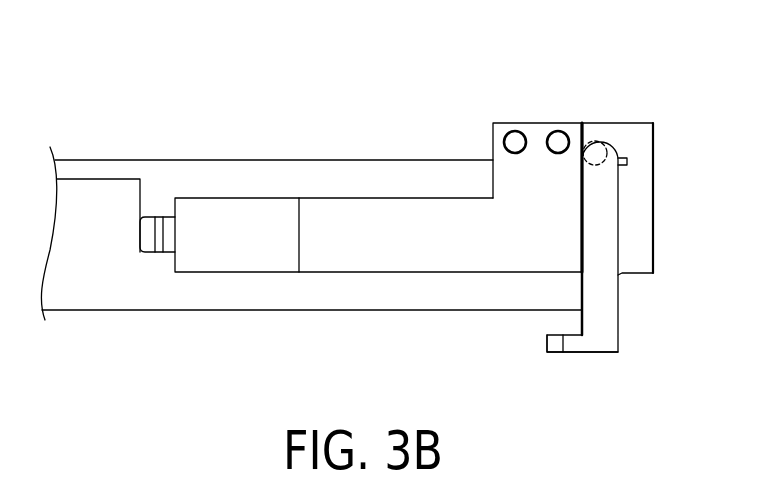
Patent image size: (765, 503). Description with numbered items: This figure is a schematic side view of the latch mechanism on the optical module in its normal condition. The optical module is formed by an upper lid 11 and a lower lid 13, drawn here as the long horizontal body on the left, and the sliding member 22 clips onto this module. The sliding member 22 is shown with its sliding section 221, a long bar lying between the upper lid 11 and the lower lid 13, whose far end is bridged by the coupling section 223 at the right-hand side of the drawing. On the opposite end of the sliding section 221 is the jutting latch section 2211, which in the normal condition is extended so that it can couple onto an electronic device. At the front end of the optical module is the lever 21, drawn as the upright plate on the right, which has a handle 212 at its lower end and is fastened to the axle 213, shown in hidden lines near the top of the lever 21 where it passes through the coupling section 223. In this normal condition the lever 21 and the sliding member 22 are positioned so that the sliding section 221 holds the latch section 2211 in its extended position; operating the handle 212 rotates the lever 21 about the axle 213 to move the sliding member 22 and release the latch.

The upper lid 11 is at (258, 170).
The lower lid 13 is at (258, 302).
The lever 21 is at (612, 298).
The handle 212 is at (585, 345).
The axle 213 is at (607, 153).
The sliding member 22 is at (528, 123).
The sliding section 221 is at (354, 248).
The latch section 2211 is at (152, 232).
The coupling section 223 is at (633, 128).